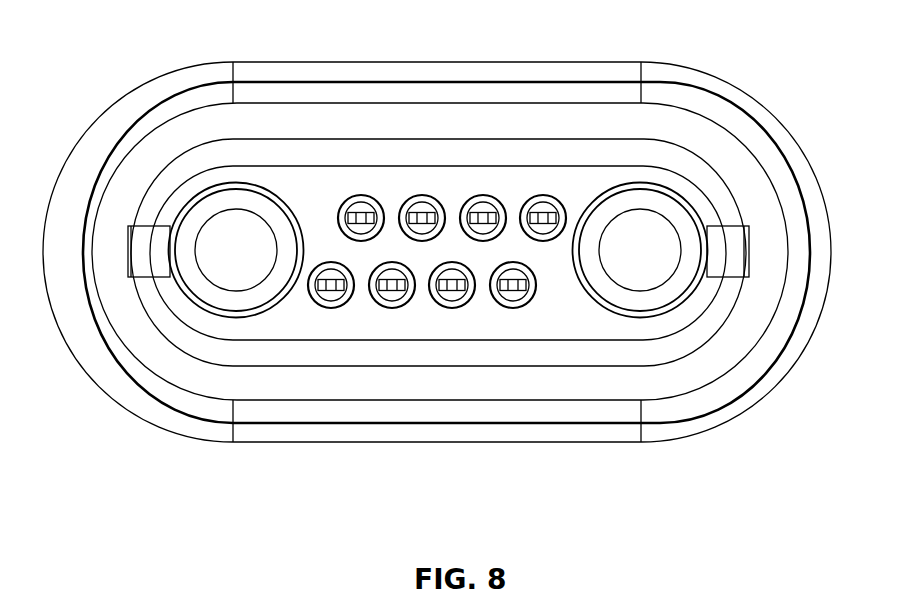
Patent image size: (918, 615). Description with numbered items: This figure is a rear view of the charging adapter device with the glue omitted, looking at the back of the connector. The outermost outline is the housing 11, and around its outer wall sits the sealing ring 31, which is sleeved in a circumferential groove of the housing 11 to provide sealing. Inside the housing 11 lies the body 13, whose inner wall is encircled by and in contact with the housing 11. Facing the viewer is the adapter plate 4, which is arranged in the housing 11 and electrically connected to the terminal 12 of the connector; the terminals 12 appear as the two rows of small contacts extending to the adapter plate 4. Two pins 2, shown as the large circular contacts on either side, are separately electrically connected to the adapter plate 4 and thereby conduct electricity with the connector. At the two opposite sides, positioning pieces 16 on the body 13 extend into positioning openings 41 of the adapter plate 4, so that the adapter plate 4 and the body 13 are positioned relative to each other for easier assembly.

The pin 2 is at (645, 265).
The adapter plate 4 is at (572, 320).
The housing 11 is at (525, 126).
The terminal 12 is at (420, 208).
The body 13 is at (392, 352).
The positioning piece 16 is at (150, 272).
The sealing ring 31 is at (790, 352).
The positioning opening 41 is at (146, 226).